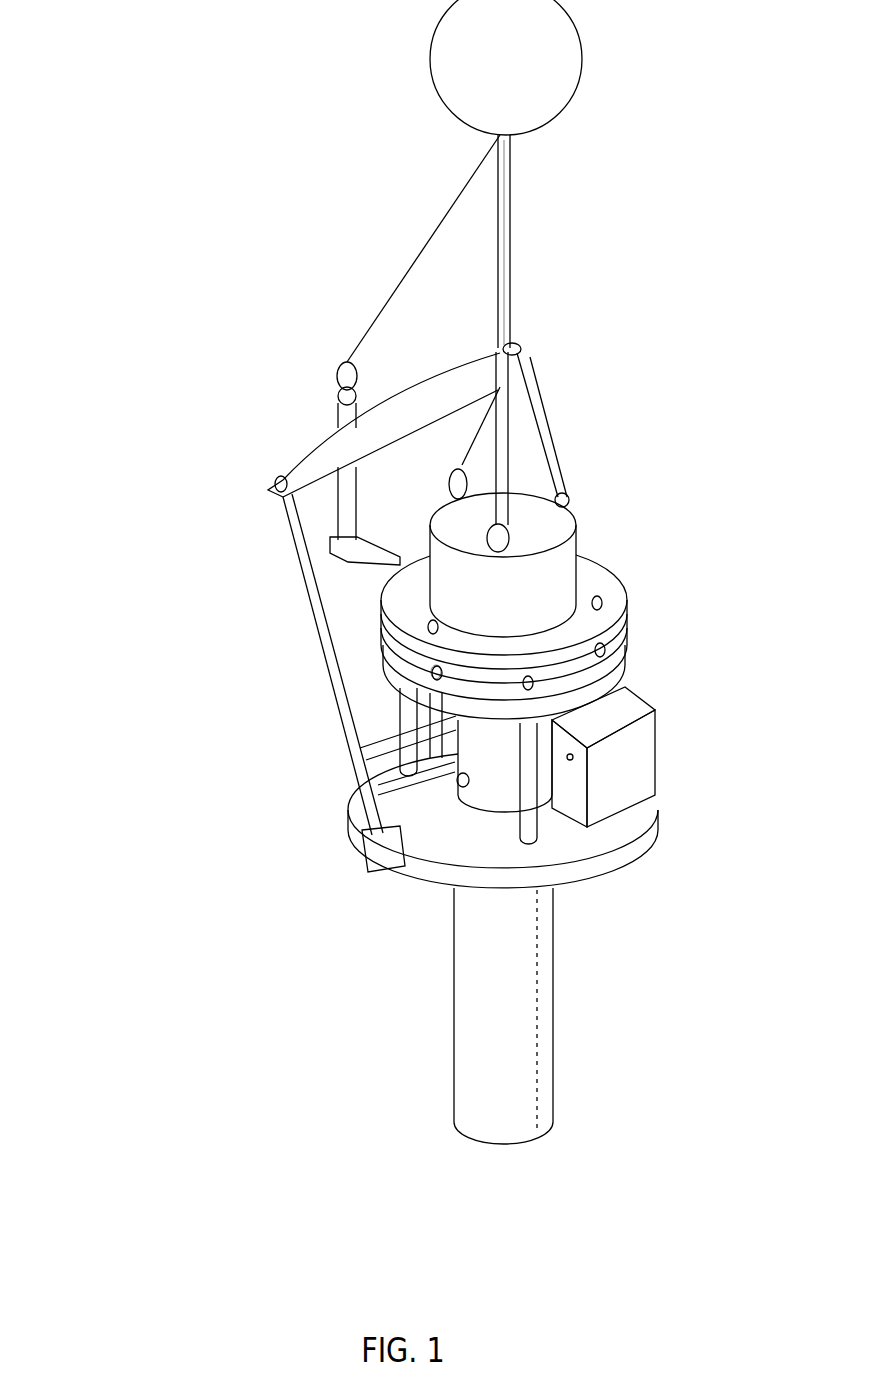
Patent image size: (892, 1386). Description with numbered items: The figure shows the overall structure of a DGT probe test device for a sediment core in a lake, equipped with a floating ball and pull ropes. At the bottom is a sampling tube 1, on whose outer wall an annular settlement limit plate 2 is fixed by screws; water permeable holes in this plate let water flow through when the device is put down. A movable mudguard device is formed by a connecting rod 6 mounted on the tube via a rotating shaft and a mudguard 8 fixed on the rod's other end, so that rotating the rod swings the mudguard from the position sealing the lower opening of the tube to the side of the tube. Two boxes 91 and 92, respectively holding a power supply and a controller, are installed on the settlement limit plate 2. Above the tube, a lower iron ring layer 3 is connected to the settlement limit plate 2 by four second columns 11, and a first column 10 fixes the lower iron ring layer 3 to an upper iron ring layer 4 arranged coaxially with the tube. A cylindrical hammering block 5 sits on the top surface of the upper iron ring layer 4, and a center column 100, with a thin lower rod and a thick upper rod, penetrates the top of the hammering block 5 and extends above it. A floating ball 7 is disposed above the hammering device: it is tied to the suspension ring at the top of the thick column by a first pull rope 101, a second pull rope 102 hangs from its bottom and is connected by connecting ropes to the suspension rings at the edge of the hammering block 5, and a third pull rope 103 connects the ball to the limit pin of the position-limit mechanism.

The sampling tube 1 is at (478, 1047).
The settlement limit plate 2 is at (630, 843).
The lower iron ring layer 3 is at (612, 658).
The upper iron ring layer 4 is at (613, 602).
The hammering block 5 is at (572, 577).
The connecting rod 6 is at (515, 424).
The floating ball 7 is at (430, 70).
The mudguard 8 is at (318, 456).
The first column 10 is at (440, 672).
The second column 11 is at (540, 819).
The box with a power supply 91 is at (405, 730).
The box with a controller 92 is at (642, 777).
The center column 100 is at (515, 486).
The first pull rope 101 is at (512, 288).
The second pull rope 102 is at (507, 226).
The third pull rope 103 is at (398, 285).